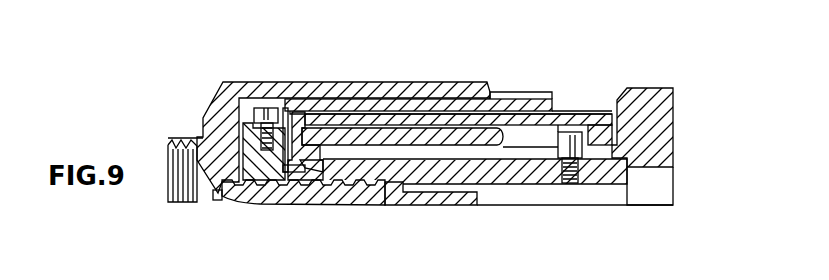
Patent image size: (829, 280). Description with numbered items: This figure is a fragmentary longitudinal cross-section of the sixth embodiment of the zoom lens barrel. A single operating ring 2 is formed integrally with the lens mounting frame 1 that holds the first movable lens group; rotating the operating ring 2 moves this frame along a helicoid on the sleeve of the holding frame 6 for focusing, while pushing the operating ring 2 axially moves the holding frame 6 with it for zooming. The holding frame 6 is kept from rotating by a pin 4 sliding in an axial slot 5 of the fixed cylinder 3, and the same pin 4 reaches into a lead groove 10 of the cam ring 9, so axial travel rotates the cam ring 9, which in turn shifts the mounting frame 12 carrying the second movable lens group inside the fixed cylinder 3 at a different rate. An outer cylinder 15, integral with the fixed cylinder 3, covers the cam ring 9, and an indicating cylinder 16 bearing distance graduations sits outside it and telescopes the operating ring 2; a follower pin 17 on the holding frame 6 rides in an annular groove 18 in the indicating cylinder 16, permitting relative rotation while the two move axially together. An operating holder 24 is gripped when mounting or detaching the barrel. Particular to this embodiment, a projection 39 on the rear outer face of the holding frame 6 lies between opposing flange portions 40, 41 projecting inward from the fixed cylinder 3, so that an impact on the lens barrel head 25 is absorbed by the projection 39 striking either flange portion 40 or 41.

The lens mounting frame 1 is at (362, 198).
The operating ring 2 is at (362, 82).
The fixed cylinder 3 is at (316, 180).
The pin 4 is at (590, 125).
The axial slot 5 is at (495, 184).
The holding frame 6 is at (460, 182).
The cam ring 9 is at (412, 113).
The lead groove 10 is at (538, 138).
The mounting frame 12 is at (418, 200).
The outer cylinder 15 is at (562, 113).
The indicating cylinder 16 is at (500, 95).
The follower pin 17 is at (262, 107).
The annular groove 18 is at (279, 112).
The operating holder 24 is at (657, 98).
The lens barrel head 25 is at (188, 137).
The projection 39 is at (548, 184).
The flange portion 40 is at (613, 184).
The flange portion 41 is at (322, 172).